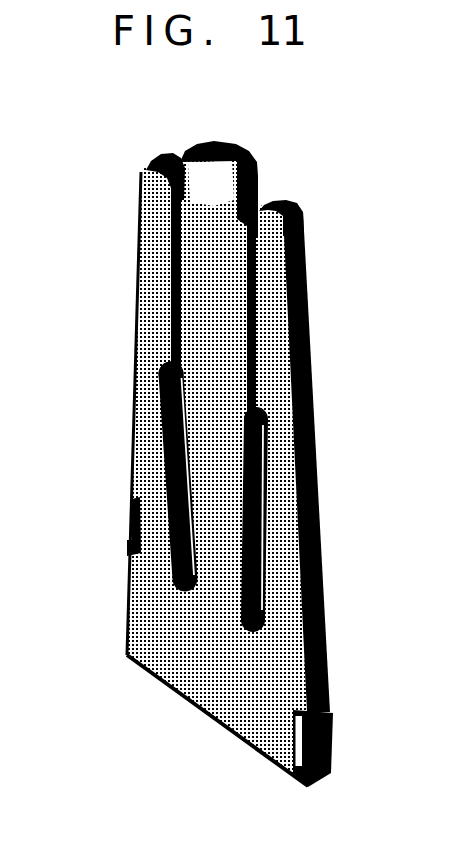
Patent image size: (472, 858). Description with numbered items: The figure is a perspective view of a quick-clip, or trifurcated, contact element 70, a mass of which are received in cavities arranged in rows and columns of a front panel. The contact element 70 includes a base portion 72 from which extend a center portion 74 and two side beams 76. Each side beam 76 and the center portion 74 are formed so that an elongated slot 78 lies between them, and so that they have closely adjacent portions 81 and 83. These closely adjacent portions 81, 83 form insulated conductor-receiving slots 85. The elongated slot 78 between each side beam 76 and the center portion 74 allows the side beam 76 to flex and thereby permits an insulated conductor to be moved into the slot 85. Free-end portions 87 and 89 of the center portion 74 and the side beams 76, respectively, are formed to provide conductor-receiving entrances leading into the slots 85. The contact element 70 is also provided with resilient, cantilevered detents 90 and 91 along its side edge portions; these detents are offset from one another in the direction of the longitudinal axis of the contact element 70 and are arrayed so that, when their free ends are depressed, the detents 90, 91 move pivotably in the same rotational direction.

The trifurcated contact element 70 is at (251, 441).
The base portion 72 is at (199, 666).
The center portion 74 is at (238, 312).
The side beams 76 is at (150, 252).
The elongated slot 78 is at (152, 466).
The closely adjacent portion 81 is at (150, 183).
The closely adjacent portion 83 is at (180, 303).
The insulated conductor-receiving slot 85 is at (172, 355).
The free-end portion of the center portion 87 is at (217, 143).
The free-end portion of the side beam 89 is at (303, 222).
The detent 90 is at (328, 748).
The detent 91 is at (129, 522).